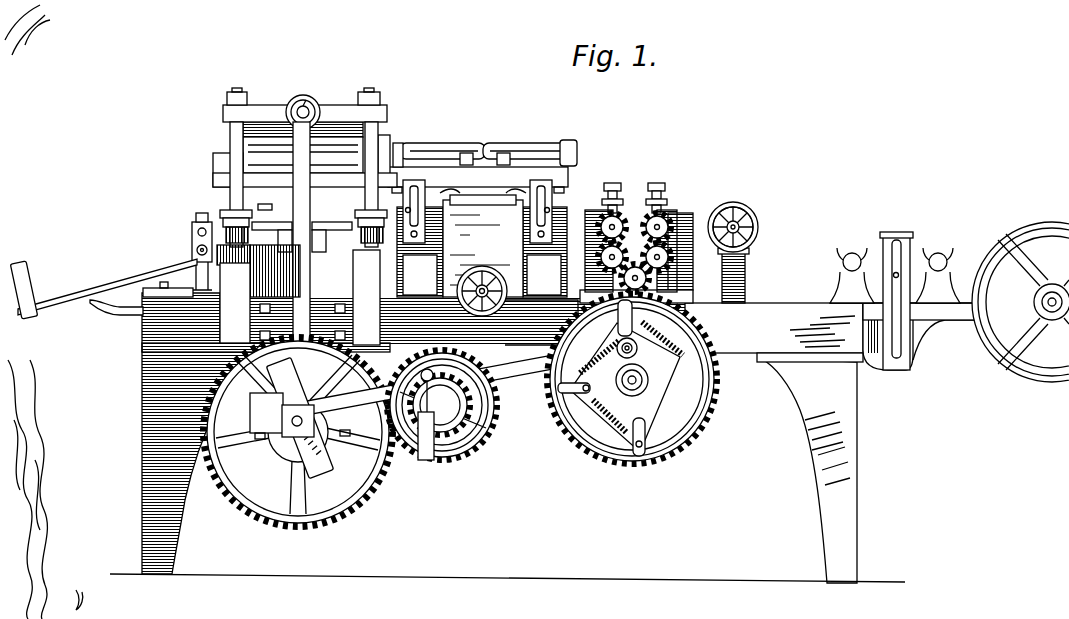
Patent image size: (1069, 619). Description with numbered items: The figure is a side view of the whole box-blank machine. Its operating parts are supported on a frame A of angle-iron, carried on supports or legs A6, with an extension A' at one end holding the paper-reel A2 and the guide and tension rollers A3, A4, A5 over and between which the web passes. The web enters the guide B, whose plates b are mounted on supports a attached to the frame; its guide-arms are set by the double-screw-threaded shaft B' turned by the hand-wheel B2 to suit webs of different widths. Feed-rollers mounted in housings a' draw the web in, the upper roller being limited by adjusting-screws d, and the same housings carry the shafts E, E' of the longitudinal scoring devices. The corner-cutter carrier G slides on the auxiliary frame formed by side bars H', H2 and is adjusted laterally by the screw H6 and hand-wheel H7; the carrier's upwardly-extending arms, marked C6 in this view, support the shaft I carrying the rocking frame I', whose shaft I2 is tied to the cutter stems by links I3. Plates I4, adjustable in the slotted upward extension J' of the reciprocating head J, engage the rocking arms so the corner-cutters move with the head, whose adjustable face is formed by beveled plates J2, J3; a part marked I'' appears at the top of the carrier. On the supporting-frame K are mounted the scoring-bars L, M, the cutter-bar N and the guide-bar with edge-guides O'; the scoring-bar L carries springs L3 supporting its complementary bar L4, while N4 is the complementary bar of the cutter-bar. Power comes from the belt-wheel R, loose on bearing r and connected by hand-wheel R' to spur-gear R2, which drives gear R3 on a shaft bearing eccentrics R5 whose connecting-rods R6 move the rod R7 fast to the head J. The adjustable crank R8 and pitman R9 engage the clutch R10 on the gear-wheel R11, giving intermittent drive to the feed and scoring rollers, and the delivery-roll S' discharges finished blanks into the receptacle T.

The frame A is at (774, 332).
The extension A' is at (949, 336).
The paper-reel A2 is at (1042, 228).
The guide and tension roller A3 is at (945, 266).
The guide and tension roller A4 is at (840, 268).
The guide and tension roller A5 is at (893, 262).
The supports or legs A6 is at (150, 458).
The supports a is at (742, 275).
The housings a' is at (644, 293).
The guide B is at (733, 217).
The hand-wheel B2 is at (752, 215).
The double-screw-threaded shaft B' is at (756, 231).
The shaft E is at (682, 251).
The shaft E' is at (634, 241).
The adjusting-screws d is at (634, 187).
The shaft I is at (485, 180).
The rocking frame I' is at (525, 139).
The shaft I2 is at (440, 145).
The links I3 is at (502, 152).
The adjustable plates I4 is at (400, 146).
The top box I'' is at (483, 206).
The corner-cutter carrier G is at (483, 248).
The hangers C6 is at (428, 228).
The side bar H2 is at (408, 292).
The side bar H' is at (545, 252).
The screw H6 is at (478, 314).
The hand-wheel H7 is at (541, 322).
The reciprocating head J is at (305, 165).
The upward extension J' is at (305, 152).
The beveled plate J2 is at (328, 172).
The beveled plate J3 is at (278, 160).
The rod R7 is at (306, 104).
The complementary bar N4 is at (252, 213).
The cutter-bar N is at (250, 236).
The edge-guides O' is at (272, 228).
The complementary bar L4 is at (350, 214).
The springs L3 is at (332, 236).
The scoring-bar L is at (368, 286).
The scoring-bar M is at (304, 262).
The plate b is at (270, 282).
The supporting-frame K is at (268, 275).
The delivery-roll S' is at (186, 251).
The receptacle T is at (103, 288).
The spur-gear R3 is at (372, 492).
The connecting-rods R6 is at (290, 356).
The eccentrics R5 is at (268, 410).
The adjustable crank R8 is at (316, 464).
The pitman R9 is at (533, 370).
The belt-wheel R is at (444, 408).
The hand-wheel R' is at (463, 405).
The spur-gear R2 is at (440, 408).
The bearing r is at (430, 460).
The clutch R10 is at (648, 404).
The gear-wheel R11 is at (684, 448).